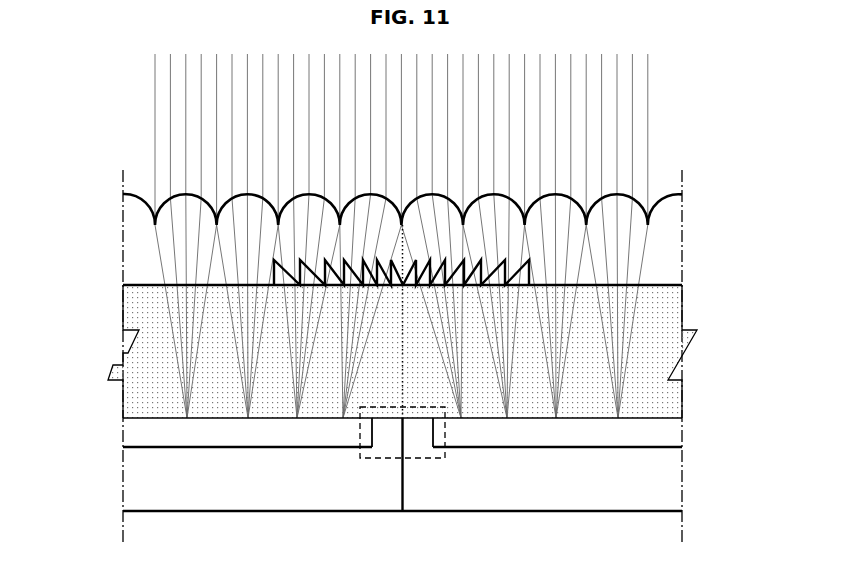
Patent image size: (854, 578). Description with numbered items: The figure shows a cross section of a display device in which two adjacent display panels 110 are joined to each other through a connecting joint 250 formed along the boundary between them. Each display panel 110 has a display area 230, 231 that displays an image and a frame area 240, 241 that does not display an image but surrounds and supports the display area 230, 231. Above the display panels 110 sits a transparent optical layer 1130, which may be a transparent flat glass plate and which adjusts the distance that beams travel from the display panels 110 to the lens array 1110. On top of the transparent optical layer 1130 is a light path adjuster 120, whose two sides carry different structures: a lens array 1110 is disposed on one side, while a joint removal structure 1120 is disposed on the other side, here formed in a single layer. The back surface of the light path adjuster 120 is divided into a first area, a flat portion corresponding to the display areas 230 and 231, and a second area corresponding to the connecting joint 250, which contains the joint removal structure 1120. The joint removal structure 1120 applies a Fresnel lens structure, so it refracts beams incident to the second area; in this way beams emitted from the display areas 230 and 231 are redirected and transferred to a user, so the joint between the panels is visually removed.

The lens array 1110 is at (140, 217).
The joint removal structure 1120 is at (500, 265).
The light path adjuster 120 is at (686, 195).
The transparent optical layer 1130 is at (686, 418).
The display panels 110 is at (686, 511).
The display area 230 is at (138, 429).
The display area 231 is at (668, 438).
The frame area 240 is at (138, 481).
The frame area 241 is at (668, 490).
The connecting joint 250 is at (422, 458).